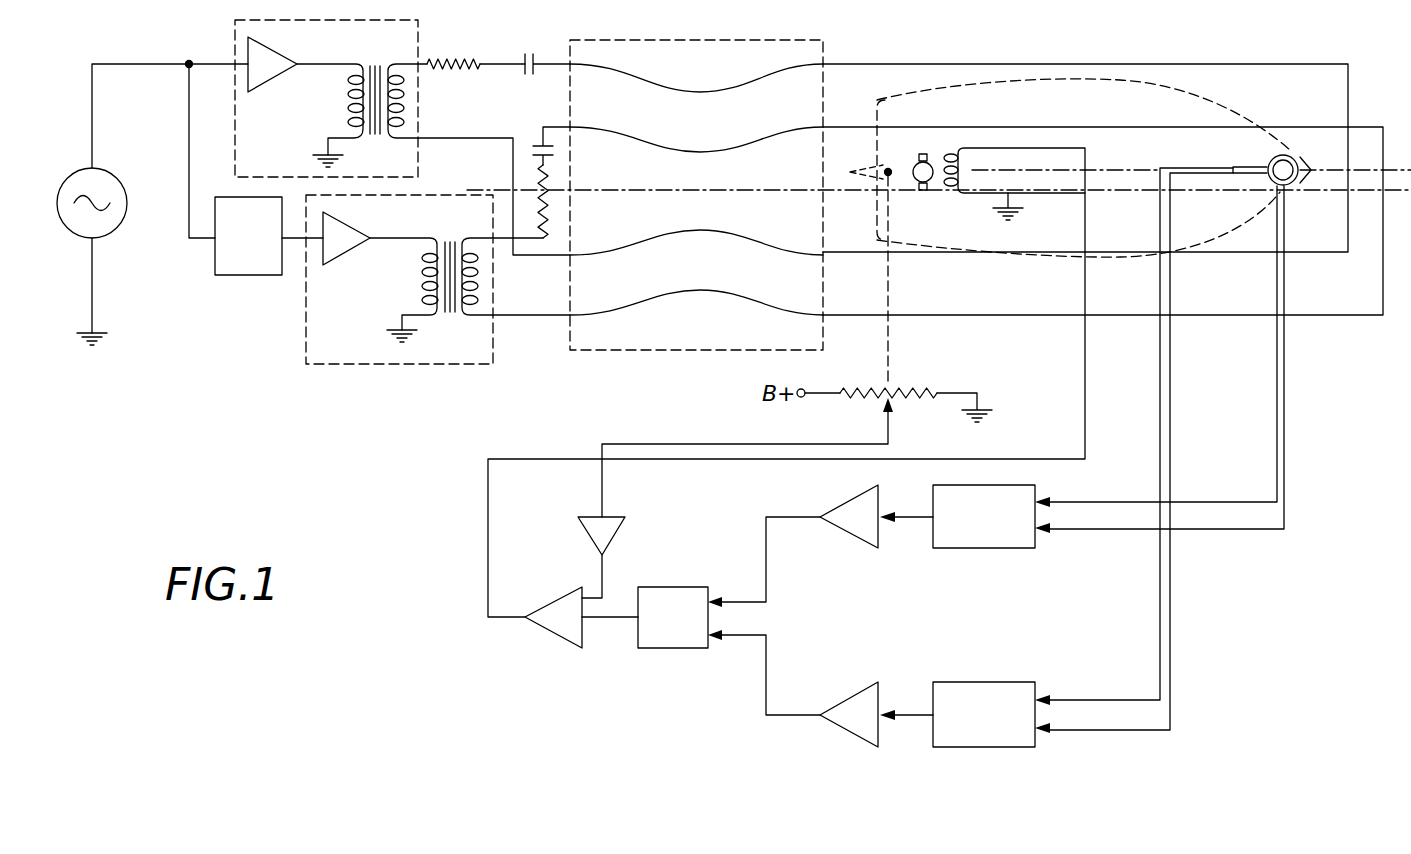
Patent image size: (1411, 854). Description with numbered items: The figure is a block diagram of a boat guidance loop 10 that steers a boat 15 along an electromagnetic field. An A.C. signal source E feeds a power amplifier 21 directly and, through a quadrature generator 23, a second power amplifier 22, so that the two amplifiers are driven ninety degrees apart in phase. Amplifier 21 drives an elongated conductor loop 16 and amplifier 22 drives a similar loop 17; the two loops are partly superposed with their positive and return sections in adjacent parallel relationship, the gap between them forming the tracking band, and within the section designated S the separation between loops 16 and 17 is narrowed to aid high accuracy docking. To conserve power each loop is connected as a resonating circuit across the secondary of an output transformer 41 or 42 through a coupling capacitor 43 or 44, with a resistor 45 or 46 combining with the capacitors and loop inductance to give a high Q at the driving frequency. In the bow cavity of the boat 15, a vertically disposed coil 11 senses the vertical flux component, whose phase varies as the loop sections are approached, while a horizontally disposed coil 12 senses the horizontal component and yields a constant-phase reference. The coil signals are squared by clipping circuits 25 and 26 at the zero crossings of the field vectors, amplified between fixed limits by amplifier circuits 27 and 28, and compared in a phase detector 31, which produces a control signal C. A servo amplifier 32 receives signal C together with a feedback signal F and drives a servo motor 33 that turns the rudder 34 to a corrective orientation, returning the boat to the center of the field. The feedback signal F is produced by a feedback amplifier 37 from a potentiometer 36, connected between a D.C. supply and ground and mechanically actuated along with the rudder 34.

The guidance loop 10 is at (1294, 469).
The vertically disposed inductive sensor or coil 11 is at (1291, 155).
The horizontally disposed inductive sensor or coil 12 is at (1252, 166).
The boat 15 is at (1270, 208).
The conductor loop 16 is at (740, 90).
The conductor loop 17 is at (748, 292).
The power amplifier 21 is at (418, 20).
The power amplifier 22 is at (440, 365).
The quadrature generator 23 is at (245, 275).
The clipping circuit 25 is at (1015, 550).
The clipping circuit 26 is at (1015, 748).
The amplifier circuit 27 is at (857, 545).
The amplifier circuit 28 is at (857, 745).
The phase detector 31 is at (680, 650).
The servo amplifier 32 is at (555, 640).
The servo motor 33 is at (930, 190).
The rudder 34 is at (872, 167).
The potentiometer 36 is at (900, 400).
The feedback amplifier 37 is at (620, 528).
The output transformer 41 is at (376, 64).
The output transformer 42 is at (447, 245).
The capacitor 43 is at (536, 58).
The capacitor 44 is at (540, 145).
The resistor 45 is at (470, 63).
The resistor 46 is at (549, 208).
The A.C. signal source E is at (118, 181).
The narrowed section S is at (797, 40).
The feedback signal F is at (604, 571).
The control signal C is at (614, 619).